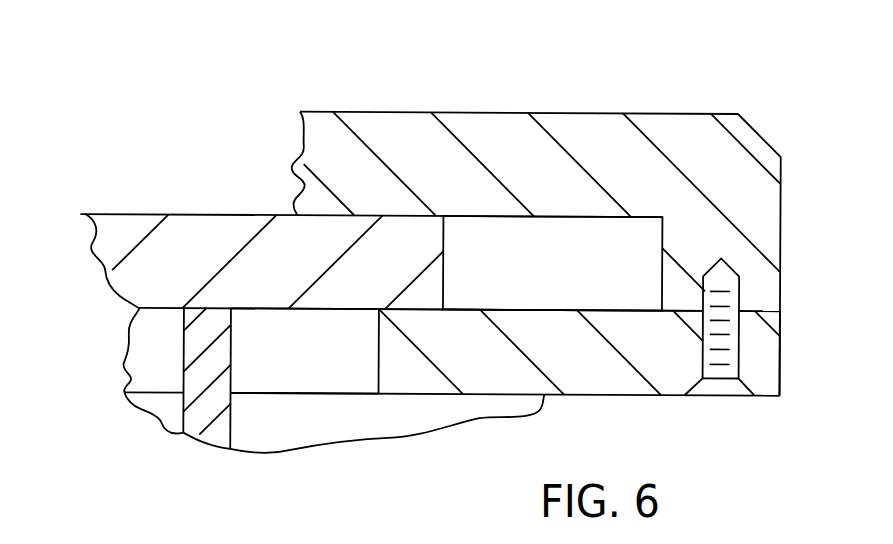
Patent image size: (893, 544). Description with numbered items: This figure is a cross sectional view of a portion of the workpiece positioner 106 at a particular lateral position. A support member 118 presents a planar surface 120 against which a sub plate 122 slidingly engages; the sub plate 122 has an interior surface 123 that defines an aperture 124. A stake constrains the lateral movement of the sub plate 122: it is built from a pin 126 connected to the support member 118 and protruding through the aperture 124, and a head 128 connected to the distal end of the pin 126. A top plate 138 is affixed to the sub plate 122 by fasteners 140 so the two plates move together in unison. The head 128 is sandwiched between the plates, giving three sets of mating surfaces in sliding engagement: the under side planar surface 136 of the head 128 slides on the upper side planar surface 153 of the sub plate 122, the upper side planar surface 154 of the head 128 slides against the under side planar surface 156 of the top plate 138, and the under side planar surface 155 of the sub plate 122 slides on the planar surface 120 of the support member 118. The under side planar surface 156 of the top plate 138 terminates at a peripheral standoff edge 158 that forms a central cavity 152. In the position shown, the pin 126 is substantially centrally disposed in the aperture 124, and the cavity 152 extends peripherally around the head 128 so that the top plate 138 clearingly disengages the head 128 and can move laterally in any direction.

The workpiece positioner 106 is at (266, 69).
The top plate 138 is at (527, 249).
The central cavity 152 is at (561, 191).
The upper side planar surface of the head 154 is at (203, 215).
The head 128 is at (407, 237).
The peripheral standoff edge 158 is at (757, 223).
The under side planar surface of the top plate 156 is at (452, 219).
The upper side planar surface of the sub plate 153 is at (582, 310).
The under side planar surface of the sub plate 155 is at (622, 395).
The under side planar surface of the head 136 is at (541, 353).
The fastener 140 is at (722, 395).
The sub plate 122 is at (780, 365).
The pin 126 is at (232, 346).
The planar surface of the support member 120 is at (376, 389).
The interior surface of the sub plate 123 is at (379, 357).
The aperture 124 is at (364, 382).
The support member 118 is at (277, 423).